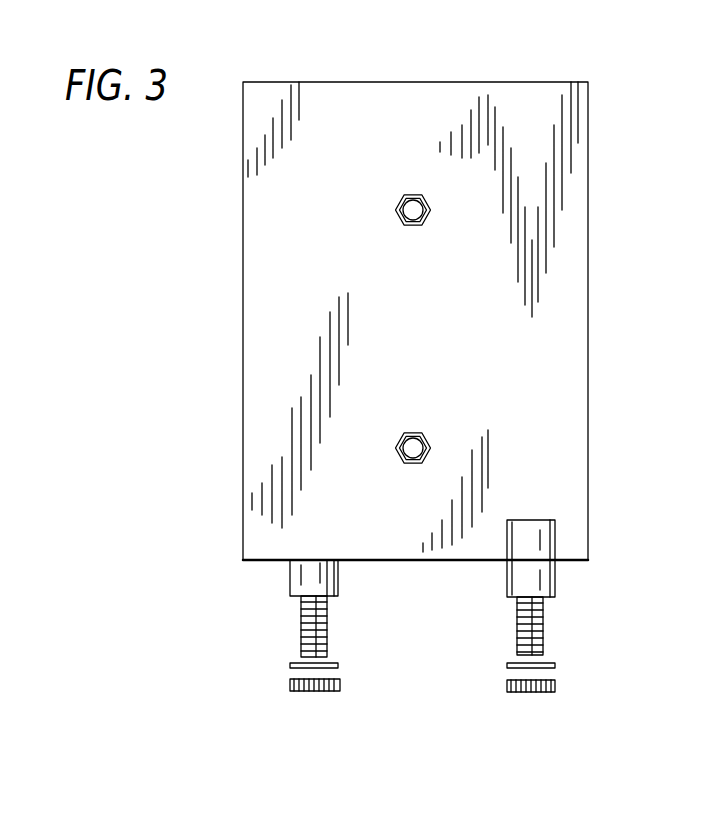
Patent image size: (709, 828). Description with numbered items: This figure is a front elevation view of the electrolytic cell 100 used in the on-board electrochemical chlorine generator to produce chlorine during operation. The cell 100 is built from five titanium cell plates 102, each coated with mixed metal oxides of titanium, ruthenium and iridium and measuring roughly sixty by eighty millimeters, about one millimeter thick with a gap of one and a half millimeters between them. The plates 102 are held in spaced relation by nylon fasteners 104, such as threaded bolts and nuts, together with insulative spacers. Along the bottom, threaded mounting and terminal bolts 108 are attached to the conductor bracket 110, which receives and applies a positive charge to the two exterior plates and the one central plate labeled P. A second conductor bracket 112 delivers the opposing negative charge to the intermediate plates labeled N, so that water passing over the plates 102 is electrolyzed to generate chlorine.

The electrolytic cell 100 is at (543, 62).
The cell plates 102 is at (578, 330).
The nylon fasteners 104 is at (412, 228).
The threaded mounting and terminal bolts 108 is at (517, 633).
The conductor bracket 110 is at (553, 577).
The conductor bracket 112 is at (287, 582).